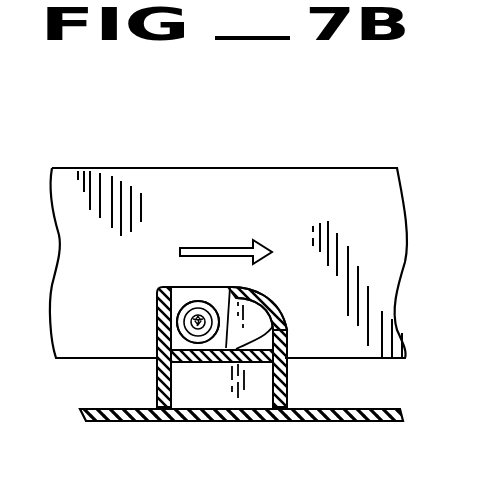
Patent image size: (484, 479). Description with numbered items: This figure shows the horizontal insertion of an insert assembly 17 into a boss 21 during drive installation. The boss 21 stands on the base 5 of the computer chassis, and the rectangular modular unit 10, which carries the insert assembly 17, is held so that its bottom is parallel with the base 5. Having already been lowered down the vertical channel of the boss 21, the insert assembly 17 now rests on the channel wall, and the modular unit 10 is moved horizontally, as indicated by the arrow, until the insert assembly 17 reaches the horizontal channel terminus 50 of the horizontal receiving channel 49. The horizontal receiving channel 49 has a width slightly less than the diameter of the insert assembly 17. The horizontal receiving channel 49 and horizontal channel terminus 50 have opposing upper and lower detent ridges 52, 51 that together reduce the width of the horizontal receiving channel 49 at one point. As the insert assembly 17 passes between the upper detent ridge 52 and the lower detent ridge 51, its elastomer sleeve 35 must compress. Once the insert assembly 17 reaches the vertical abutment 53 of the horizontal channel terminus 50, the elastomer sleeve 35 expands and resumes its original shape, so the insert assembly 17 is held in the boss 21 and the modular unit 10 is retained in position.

The modular unit 10 is at (247, 210).
The insert assembly 17 is at (187, 289).
The elastomer sleeve 35 is at (188, 326).
The upper detent ridge 52 is at (233, 286).
The horizontal channel terminus 50 is at (251, 313).
The vertical abutment 53 is at (282, 317).
The lower detent ridge 51 is at (276, 333).
The horizontal receiving channel 49 is at (215, 361).
The boss 21 is at (288, 384).
The base 5 is at (367, 409).